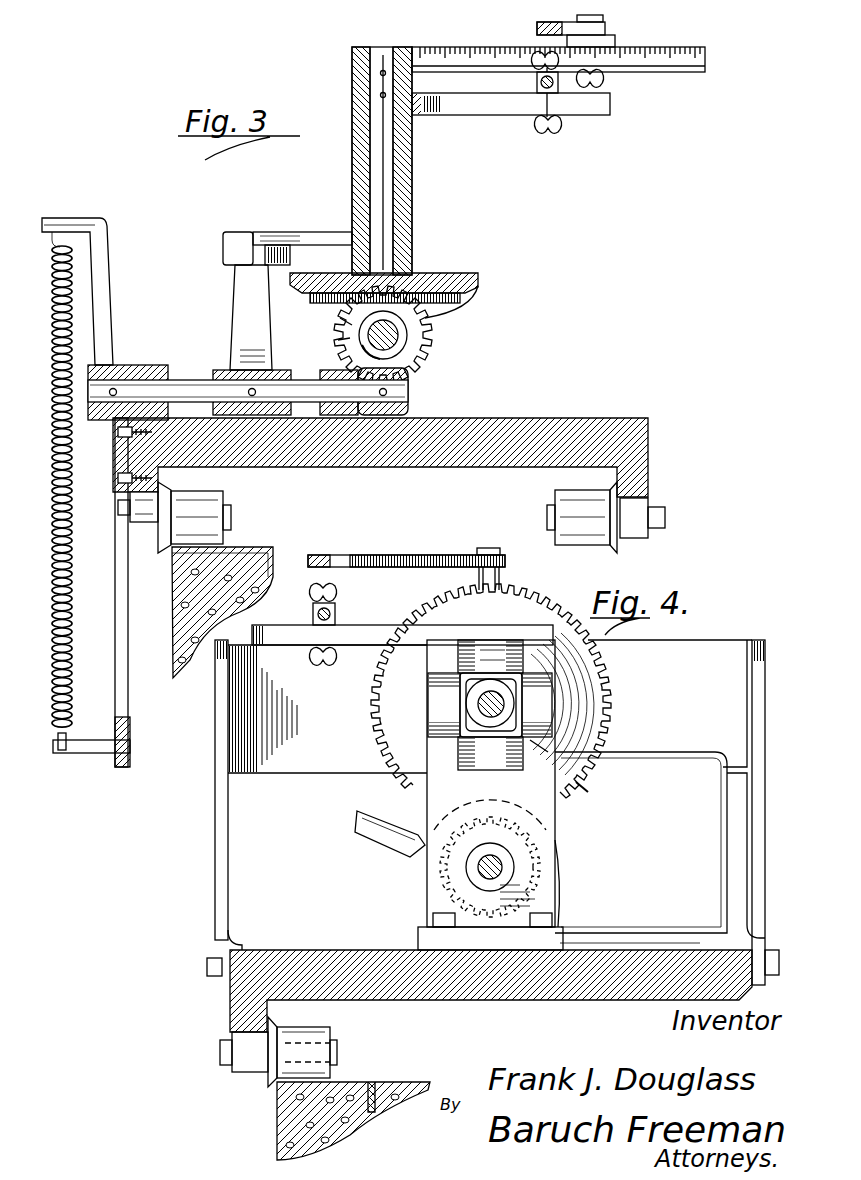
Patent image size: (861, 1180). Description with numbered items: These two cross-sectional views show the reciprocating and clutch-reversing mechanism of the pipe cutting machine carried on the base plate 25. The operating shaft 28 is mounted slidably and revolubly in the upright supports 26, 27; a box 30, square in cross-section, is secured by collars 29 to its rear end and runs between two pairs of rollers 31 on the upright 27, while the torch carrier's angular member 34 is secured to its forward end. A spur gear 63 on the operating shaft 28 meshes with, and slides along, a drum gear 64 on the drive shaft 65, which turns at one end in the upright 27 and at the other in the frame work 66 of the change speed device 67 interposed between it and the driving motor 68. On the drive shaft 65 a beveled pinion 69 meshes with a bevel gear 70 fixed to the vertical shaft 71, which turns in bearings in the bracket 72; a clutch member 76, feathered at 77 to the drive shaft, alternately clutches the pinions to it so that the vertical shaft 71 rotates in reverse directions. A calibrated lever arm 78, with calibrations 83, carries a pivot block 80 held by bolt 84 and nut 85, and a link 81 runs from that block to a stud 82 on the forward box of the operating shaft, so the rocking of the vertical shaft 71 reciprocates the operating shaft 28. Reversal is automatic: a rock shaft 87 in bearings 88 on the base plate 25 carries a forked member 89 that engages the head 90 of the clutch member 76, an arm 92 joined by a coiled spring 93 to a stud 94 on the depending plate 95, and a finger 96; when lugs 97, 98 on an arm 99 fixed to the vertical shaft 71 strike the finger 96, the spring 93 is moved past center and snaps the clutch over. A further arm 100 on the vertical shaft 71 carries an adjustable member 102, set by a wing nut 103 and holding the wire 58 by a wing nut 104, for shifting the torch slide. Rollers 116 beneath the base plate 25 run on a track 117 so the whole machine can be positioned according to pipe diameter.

In FIG. 3, the base plate 25 is at (540, 418).
In FIG. 4, the base plate 25 is at (366, 935).
In FIG. 4, the upright support 26 is at (215, 855).
In FIG. 4, the upright support 27 is at (560, 832).
In FIG. 4, the operating shaft 28 is at (586, 778).
In FIG. 4, the collar 29 is at (560, 748).
In FIG. 4, the box 30 is at (462, 676).
In FIG. 4, the rollers 31 is at (462, 752).
In FIG. 4, the angular member 34 is at (548, 700).
In FIG. 3, the wire 58 is at (560, 82).
In FIG. 4, the spur gear 63 is at (340, 612).
In FIG. 4, the drum gear 64 is at (440, 897).
In FIG. 3, the drive shaft 65 is at (406, 333).
In FIG. 4, the drive shaft 65 is at (480, 870).
In FIG. 4, the frame work 66 is at (561, 865).
In FIG. 4, the change speed device 67 is at (402, 851).
In FIG. 4, the driving motor 68 is at (712, 870).
In FIG. 3, the beveled pinion 69 is at (412, 345).
In FIG. 3, the bevel gear 70 is at (465, 281).
In FIG. 3, the vertical shaft 71 is at (400, 205).
In FIG. 3, the bracket 72 is at (413, 183).
In FIG. 3, the clutch member 76 is at (420, 325).
In FIG. 3, the feather 77 is at (352, 327).
In FIG. 3, the lever arm 78 is at (706, 50).
In FIG. 3, the pivot block 80 is at (615, 40).
In FIG. 3, the link 81 is at (537, 28).
In FIG. 4, the link 81 is at (470, 568).
In FIG. 4, the stud 82 is at (500, 582).
In FIG. 3, the calibrations 83 is at (662, 50).
In FIG. 3, the bolt 84 is at (596, 18).
In FIG. 3, the nut 85 is at (603, 82).
In FIG. 3, the rock shaft 87 is at (181, 382).
In FIG. 3, the bearings 88 is at (150, 370).
In FIG. 3, the forked member 89 is at (410, 381).
In FIG. 3, the head 90 is at (480, 297).
In FIG. 3, the arm 92 is at (111, 295).
In FIG. 3, the coiled spring 93 is at (52, 315).
In FIG. 3, the stud 94 is at (95, 757).
In FIG. 3, the depending plate 95 is at (115, 695).
In FIG. 3, the finger 96 is at (236, 310).
In FIG. 3, the lug 97 is at (228, 262).
In FIG. 3, the lug 98 is at (290, 258).
In FIG. 3, the arm 99 is at (291, 224).
In FIG. 3, the arm 100 is at (487, 115).
In FIG. 3, the adjustable member 102 is at (540, 84).
In FIG. 3, the wing nut 103 is at (547, 134).
In FIG. 3, the wing nut 104 is at (537, 58).
In FIG. 3, the rollers 116 is at (165, 516).
In FIG. 4, the rollers 116 is at (262, 1045).
In FIG. 3, the track 117 is at (233, 548).